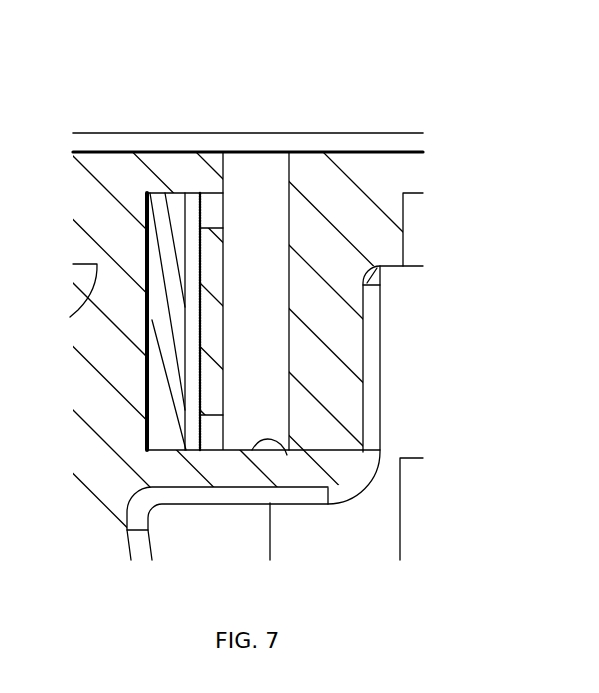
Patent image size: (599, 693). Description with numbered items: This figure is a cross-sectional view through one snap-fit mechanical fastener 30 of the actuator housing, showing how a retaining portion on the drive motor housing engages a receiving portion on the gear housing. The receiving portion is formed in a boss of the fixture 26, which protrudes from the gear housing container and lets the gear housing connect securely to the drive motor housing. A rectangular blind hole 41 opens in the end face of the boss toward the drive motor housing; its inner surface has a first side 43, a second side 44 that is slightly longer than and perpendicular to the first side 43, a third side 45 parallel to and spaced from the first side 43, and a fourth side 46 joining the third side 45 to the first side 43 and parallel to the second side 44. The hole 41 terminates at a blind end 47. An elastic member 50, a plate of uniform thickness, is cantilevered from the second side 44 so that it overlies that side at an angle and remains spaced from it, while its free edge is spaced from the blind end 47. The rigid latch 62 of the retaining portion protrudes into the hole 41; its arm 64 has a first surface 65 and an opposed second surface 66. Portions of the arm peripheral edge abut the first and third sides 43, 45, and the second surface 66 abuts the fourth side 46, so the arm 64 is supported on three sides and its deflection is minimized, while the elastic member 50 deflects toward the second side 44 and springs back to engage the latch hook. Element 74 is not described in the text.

The fixture 26 is at (108, 172).
The snap fit mechanical fastener 30 is at (124, 196).
The blind hole 41 is at (262, 314).
The first side 43 is at (143, 216).
The second side 44 is at (278, 342).
The third side 45 is at (287, 455).
The fourth side 46 is at (148, 367).
The blind end 47 is at (276, 403).
The elastic member 50 is at (214, 262).
The latch 62 is at (171, 208).
The arm 64 is at (206, 140).
The first surface 65 is at (190, 388).
The second surface 66 is at (148, 333).
The spacer 74 is at (212, 440).